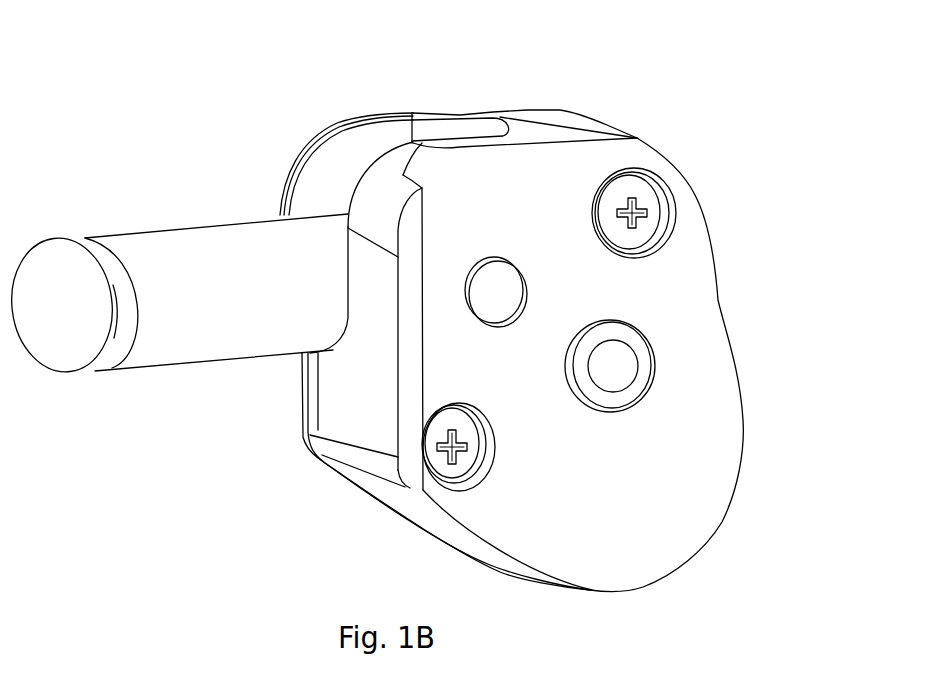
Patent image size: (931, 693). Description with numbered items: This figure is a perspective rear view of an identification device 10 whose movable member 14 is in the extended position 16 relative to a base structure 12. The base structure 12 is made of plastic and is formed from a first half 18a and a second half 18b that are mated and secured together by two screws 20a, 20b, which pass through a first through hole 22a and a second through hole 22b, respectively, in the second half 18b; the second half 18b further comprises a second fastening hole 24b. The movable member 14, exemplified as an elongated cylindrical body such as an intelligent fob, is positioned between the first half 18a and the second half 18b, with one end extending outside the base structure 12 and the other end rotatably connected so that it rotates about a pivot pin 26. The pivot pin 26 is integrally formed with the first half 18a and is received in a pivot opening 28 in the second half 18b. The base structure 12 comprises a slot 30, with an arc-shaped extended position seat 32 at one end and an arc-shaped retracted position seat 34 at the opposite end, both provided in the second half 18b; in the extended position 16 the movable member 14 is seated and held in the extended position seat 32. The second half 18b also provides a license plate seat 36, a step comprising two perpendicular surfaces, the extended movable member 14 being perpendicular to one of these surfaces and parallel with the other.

The identification device 10 is at (276, 77).
The base structure 12 is at (673, 482).
The movable member 14 is at (192, 257).
The extended position 16 is at (108, 166).
The first half 18a is at (342, 161).
The second half 18b is at (655, 538).
The screw 20a is at (642, 197).
The screw 20b is at (467, 457).
The first through hole 22a is at (670, 217).
The second through hole 22b is at (488, 430).
The second fastening hole 24b is at (603, 365).
The pivot pin 26 is at (492, 292).
The pivot opening 28 is at (525, 283).
The slot 30 is at (367, 147).
The extended position seat 32 is at (352, 307).
The retracted position seat 34 is at (480, 137).
The license plate seat 36 is at (412, 183).